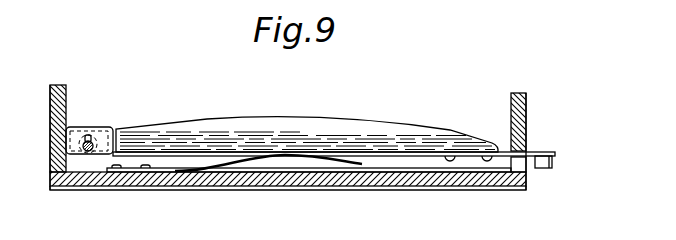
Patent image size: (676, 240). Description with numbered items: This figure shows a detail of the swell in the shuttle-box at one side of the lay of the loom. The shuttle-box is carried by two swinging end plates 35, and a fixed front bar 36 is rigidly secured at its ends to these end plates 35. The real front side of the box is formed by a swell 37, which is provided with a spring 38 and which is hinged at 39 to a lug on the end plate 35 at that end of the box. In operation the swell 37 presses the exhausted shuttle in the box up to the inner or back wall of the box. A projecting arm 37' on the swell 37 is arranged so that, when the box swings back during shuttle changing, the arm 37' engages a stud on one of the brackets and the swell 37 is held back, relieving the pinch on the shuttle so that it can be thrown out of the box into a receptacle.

The end plate 35 is at (67, 96).
The fixed front bar 36 is at (228, 176).
The swell 37 is at (307, 119).
The projecting arm 37' is at (352, 139).
The spring 38 is at (269, 157).
The hinge 39 is at (91, 141).